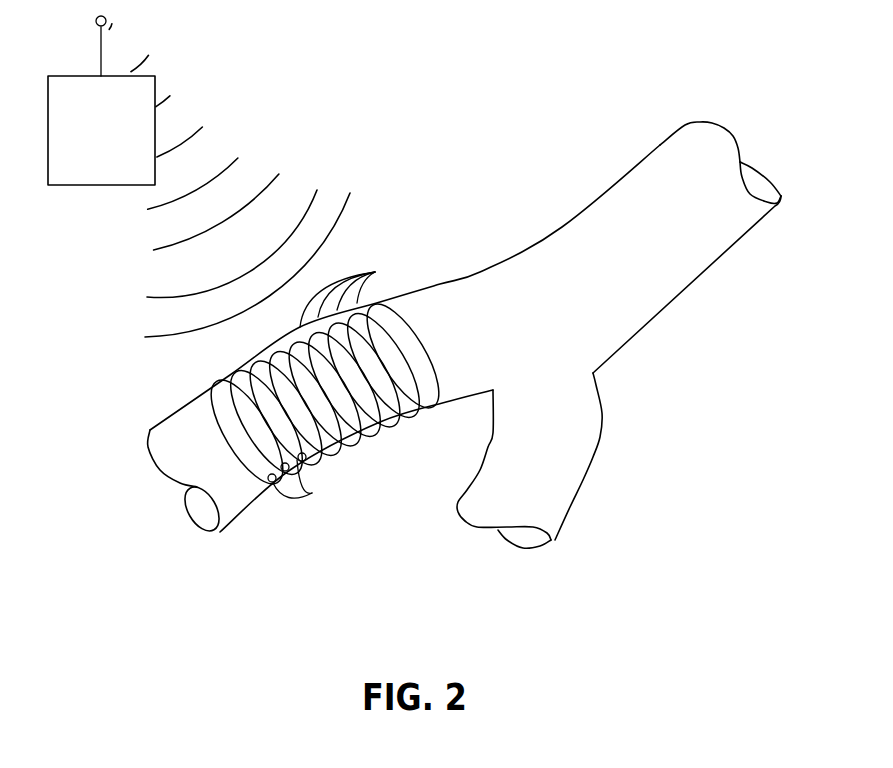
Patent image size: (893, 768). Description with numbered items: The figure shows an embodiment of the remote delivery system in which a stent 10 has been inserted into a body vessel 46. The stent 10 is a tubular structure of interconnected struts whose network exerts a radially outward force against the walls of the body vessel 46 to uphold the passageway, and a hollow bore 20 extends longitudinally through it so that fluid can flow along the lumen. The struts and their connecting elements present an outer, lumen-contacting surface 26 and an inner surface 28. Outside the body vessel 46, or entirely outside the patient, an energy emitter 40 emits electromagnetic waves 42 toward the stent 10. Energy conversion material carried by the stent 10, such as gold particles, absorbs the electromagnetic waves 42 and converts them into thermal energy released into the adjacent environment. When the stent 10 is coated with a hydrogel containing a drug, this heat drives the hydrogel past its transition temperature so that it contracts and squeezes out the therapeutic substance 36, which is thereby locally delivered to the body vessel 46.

The stent 10 is at (378, 442).
The hollow bore 20 is at (205, 462).
The outer surface 26 is at (372, 273).
The inner surface 28 is at (312, 494).
The therapeutic substance 36 is at (448, 375).
The energy emitter 40 is at (68, 187).
The electromagnetic waves 42 is at (243, 198).
The body vessel 46 is at (232, 494).